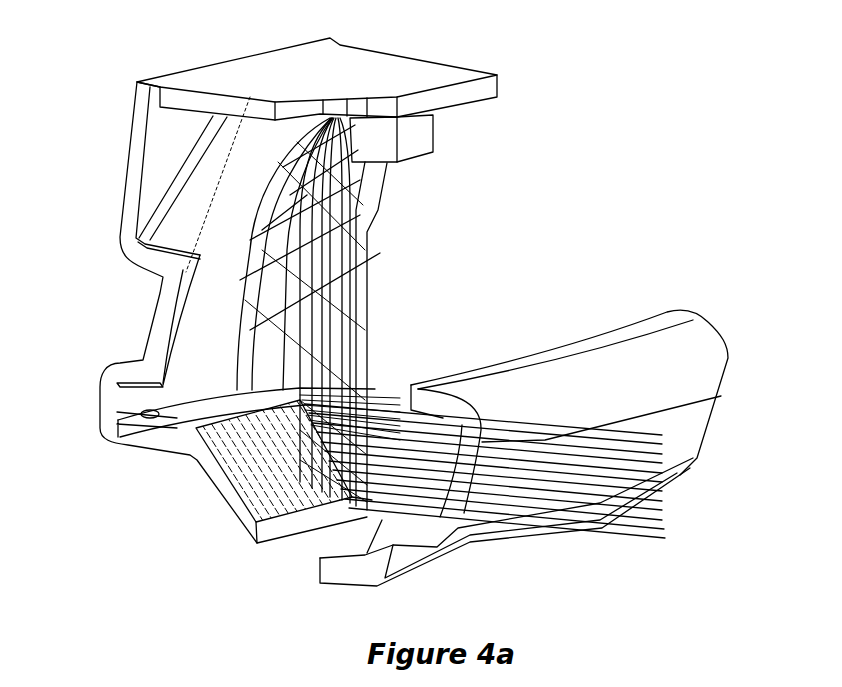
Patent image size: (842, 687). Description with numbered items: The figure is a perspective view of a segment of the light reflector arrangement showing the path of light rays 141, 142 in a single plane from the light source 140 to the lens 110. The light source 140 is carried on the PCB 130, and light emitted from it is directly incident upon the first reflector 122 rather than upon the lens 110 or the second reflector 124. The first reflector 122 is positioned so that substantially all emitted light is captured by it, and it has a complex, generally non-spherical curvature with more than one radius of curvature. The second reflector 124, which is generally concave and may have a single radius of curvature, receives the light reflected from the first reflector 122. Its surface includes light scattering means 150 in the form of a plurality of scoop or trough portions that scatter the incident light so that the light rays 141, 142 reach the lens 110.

The lens 110 is at (730, 360).
The first reflector 122 is at (197, 327).
The second reflector 124 is at (240, 460).
The PCB 130 is at (366, 72).
The light source 140 is at (415, 134).
The light rays 141 is at (370, 253).
The light rays 142 is at (635, 545).
The light scattering means 150 is at (380, 407).